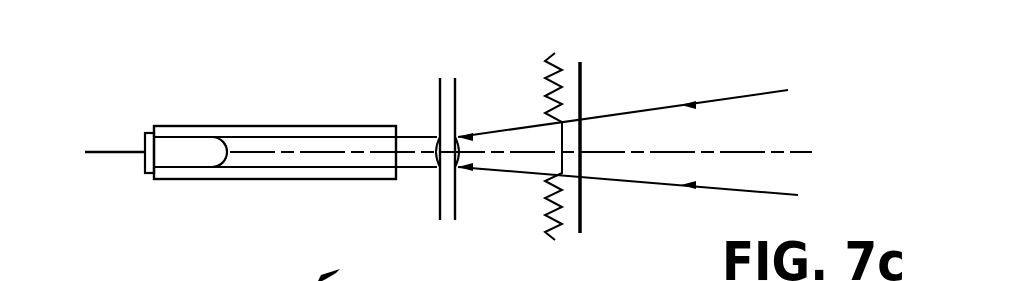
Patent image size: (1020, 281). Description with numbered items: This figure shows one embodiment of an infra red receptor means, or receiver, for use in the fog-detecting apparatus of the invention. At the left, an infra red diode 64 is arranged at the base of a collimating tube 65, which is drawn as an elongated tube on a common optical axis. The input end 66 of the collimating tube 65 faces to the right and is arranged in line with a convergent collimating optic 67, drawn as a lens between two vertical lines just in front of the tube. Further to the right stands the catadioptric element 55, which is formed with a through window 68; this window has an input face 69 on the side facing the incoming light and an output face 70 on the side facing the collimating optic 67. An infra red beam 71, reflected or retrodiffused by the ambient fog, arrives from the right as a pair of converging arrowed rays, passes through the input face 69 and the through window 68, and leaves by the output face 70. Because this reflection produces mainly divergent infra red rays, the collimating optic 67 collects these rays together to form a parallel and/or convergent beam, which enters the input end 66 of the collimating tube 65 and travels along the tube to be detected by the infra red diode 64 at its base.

The catadioptric element 55 is at (572, 80).
The infra red diode 64 is at (200, 158).
The collimating tube 65 is at (193, 125).
The input end 66 is at (397, 163).
The convergent collimating optic 67 is at (440, 92).
The through window 68 is at (570, 138).
The input face 69 is at (581, 170).
The output face 70 is at (560, 163).
The infra red beam 71 is at (747, 120).